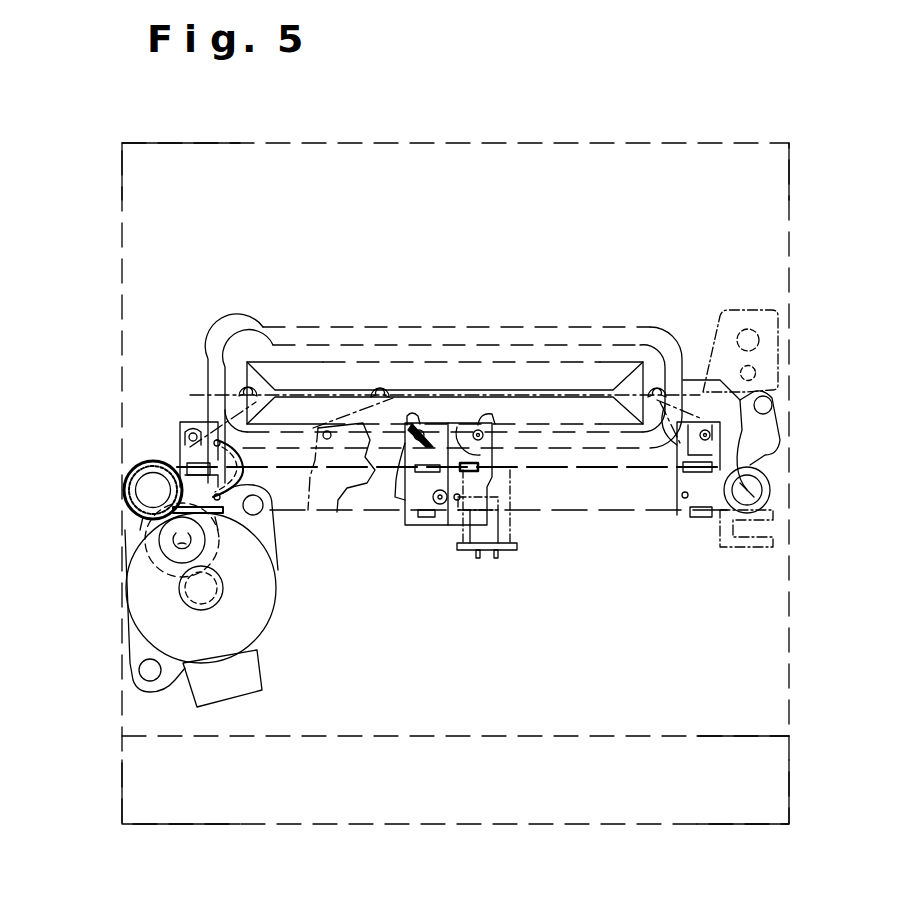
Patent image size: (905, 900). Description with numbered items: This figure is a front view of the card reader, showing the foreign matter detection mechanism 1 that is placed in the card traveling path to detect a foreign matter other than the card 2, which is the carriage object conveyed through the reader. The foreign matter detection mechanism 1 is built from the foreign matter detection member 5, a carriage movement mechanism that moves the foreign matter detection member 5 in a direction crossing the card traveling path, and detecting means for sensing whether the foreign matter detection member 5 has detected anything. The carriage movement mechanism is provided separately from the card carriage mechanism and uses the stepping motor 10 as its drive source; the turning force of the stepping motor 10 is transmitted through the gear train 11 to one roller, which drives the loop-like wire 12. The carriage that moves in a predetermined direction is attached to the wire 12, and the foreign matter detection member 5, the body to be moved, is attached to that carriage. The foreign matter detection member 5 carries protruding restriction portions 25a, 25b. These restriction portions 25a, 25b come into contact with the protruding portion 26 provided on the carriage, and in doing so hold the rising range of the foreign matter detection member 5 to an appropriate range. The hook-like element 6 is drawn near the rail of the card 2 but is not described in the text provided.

The foreign matter detection mechanism 1 is at (70, 137).
The card 2 is at (571, 397).
The foreign matter detection member 5 is at (308, 512).
The hook 6 is at (382, 388).
The stepping motor 10 is at (256, 620).
The gear train 11 is at (162, 590).
The wire 12 is at (573, 513).
The restriction portion 25a is at (407, 483).
The restriction portion 25b is at (677, 513).
The protruding portion 26 is at (438, 505).